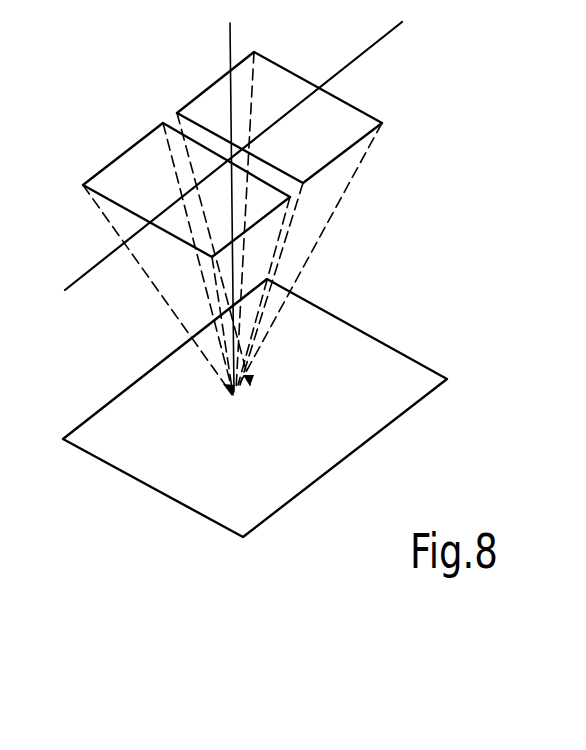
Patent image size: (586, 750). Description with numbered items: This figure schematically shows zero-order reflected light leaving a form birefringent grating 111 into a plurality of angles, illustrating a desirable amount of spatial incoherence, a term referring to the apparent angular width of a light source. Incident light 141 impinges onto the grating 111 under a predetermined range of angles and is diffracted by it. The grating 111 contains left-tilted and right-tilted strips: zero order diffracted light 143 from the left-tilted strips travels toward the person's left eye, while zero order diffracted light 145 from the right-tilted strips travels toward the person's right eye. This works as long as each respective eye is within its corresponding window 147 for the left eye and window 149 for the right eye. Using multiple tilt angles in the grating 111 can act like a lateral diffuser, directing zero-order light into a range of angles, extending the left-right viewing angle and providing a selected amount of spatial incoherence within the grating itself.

The grating 111 is at (408, 367).
The incident light 141 is at (230, 33).
The zero order diffracted light 143 is at (186, 327).
The zero order diffracted light 145 is at (312, 255).
The window 147 is at (130, 158).
The window 149 is at (360, 116).